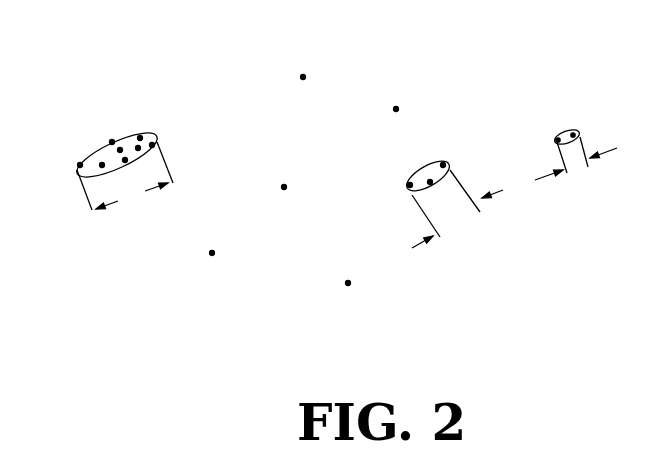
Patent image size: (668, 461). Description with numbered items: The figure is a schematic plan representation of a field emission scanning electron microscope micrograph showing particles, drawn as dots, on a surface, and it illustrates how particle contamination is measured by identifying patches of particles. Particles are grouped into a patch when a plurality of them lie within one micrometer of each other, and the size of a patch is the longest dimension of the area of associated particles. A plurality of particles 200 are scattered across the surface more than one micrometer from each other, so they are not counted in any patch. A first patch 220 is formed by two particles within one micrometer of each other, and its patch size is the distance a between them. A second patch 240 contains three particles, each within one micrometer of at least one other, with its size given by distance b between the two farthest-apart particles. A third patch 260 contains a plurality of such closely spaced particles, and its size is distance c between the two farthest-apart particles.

The particles 200 is at (308, 73).
The first patch 220 is at (578, 125).
The second patch 240 is at (442, 155).
The third patch 260 is at (100, 138).